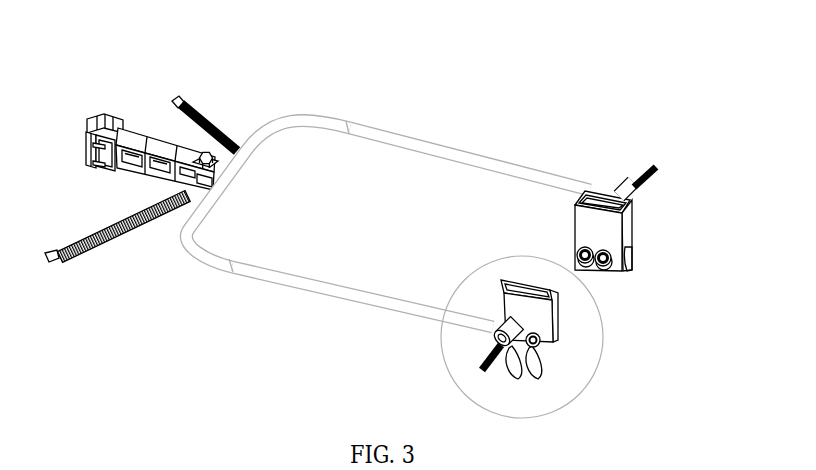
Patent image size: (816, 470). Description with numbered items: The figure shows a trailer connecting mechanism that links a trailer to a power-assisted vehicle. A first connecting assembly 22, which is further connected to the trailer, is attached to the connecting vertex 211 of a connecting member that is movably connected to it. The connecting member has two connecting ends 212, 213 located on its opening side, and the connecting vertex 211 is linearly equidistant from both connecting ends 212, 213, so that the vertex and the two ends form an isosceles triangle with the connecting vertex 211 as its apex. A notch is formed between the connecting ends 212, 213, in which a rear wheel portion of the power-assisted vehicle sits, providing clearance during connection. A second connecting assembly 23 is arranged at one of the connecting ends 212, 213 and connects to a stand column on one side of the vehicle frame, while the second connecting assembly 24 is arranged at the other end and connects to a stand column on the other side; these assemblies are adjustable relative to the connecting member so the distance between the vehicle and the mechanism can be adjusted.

The first connecting assembly 22 is at (165, 147).
The connecting vertex 211 is at (221, 187).
The connecting end 212 is at (577, 183).
The connecting end 213 is at (410, 310).
The second connecting assembly 23 is at (535, 313).
The second connecting assembly 24 is at (630, 222).